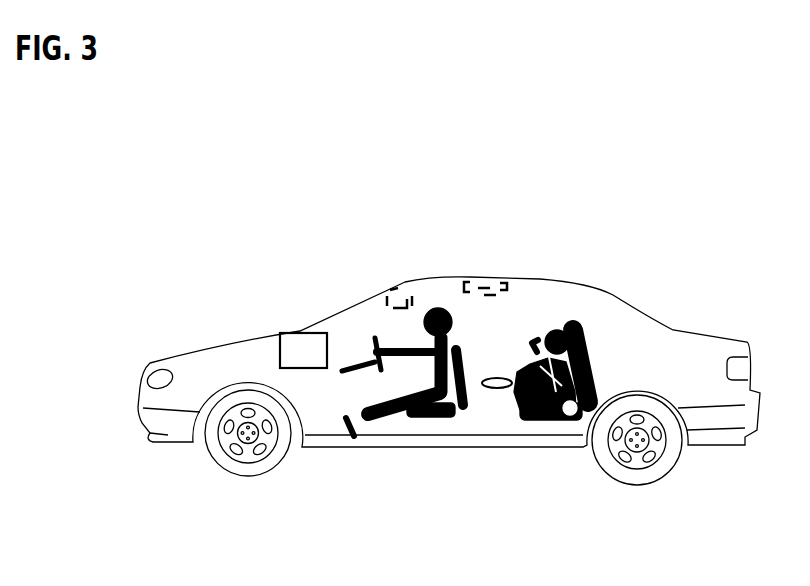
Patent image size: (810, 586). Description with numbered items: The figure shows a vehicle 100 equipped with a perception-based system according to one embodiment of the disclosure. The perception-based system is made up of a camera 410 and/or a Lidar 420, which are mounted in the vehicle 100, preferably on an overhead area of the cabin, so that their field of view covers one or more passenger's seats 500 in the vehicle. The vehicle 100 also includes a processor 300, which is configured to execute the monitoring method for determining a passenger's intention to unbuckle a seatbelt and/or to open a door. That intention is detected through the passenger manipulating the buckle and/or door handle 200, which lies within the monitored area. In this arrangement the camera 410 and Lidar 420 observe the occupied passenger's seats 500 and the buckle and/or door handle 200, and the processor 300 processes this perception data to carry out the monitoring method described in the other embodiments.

The vehicle 100 is at (205, 338).
The buckle and/or door handle 200 is at (497, 390).
The processor 300 is at (302, 343).
The camera 410 is at (400, 290).
The Lidar 420 is at (495, 277).
The passenger's seat 500 is at (593, 373).